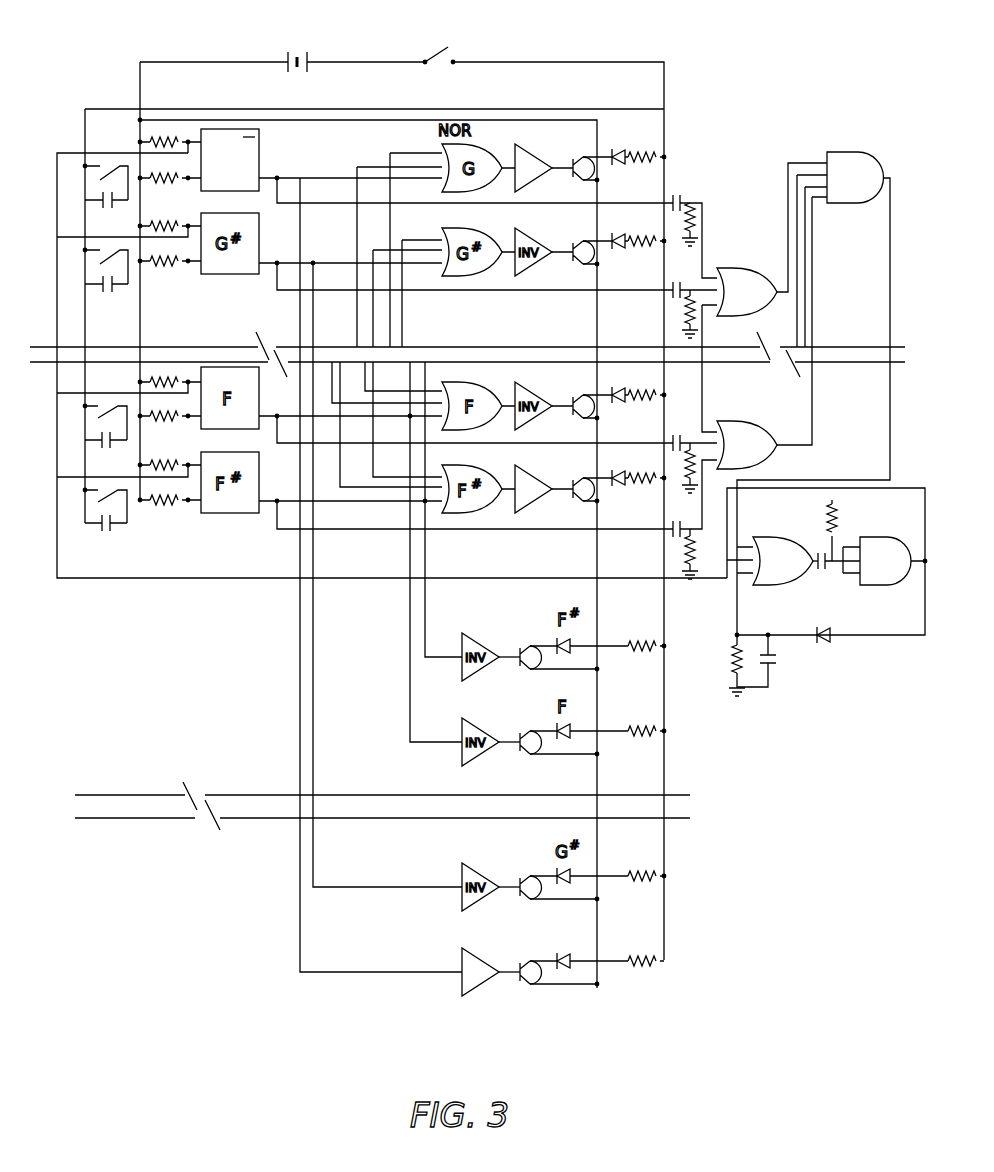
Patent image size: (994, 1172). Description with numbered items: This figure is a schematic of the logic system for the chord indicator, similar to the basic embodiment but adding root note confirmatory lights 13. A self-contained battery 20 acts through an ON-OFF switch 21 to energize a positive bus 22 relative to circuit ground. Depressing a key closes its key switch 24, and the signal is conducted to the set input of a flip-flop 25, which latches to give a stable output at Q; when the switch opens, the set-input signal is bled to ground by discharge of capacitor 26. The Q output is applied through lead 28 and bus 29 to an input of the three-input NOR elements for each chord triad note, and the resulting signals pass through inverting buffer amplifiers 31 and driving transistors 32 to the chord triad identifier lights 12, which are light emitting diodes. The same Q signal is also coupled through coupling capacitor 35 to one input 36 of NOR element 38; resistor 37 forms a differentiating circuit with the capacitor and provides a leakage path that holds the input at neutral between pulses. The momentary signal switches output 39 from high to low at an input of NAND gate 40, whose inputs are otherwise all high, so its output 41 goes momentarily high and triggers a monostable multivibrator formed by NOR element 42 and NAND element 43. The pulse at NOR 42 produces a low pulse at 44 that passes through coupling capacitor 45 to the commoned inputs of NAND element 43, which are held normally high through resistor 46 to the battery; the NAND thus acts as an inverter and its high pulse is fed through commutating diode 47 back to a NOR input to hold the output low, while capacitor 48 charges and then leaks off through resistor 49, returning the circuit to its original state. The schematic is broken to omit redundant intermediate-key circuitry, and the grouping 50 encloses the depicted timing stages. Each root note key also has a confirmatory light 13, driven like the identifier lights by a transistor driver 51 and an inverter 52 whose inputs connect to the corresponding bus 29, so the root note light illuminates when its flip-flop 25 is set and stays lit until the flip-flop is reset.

The chord triad identifier light 12 is at (617, 150).
The root note confirmatory light 13 is at (558, 956).
The battery 20 is at (297, 50).
The ON-OFF switch 21 is at (447, 62).
The positive bus 22 is at (666, 80).
The key switch 24 is at (108, 173).
The flip-flop 25 is at (228, 128).
The capacitor 26 is at (106, 208).
The lead 28 is at (298, 175).
The bus 29 is at (303, 191).
The inverting buffer amplifier 31 is at (537, 158).
The driving transistor 32 is at (576, 181).
The coupling capacitor 35 is at (678, 194).
The NOR input 36 is at (701, 232).
The resistor 37 is at (700, 243).
The NOR element 38 is at (758, 314).
The output 39 is at (788, 184).
The NAND gate 40 is at (855, 150).
The output 41 is at (891, 268).
The NOR element 42 is at (782, 546).
The NAND element 43 is at (886, 541).
The low pulse output 44 is at (812, 580).
The coupling capacitor 45 is at (825, 576).
The resistor 46 is at (834, 525).
The commutating diode 47 is at (829, 642).
The capacitor 48 is at (775, 664).
The resistor 49 is at (727, 664).
The timing circuit 50 is at (70, 153).
The transistor driver 51 is at (517, 985).
The inverter 52 is at (481, 956).